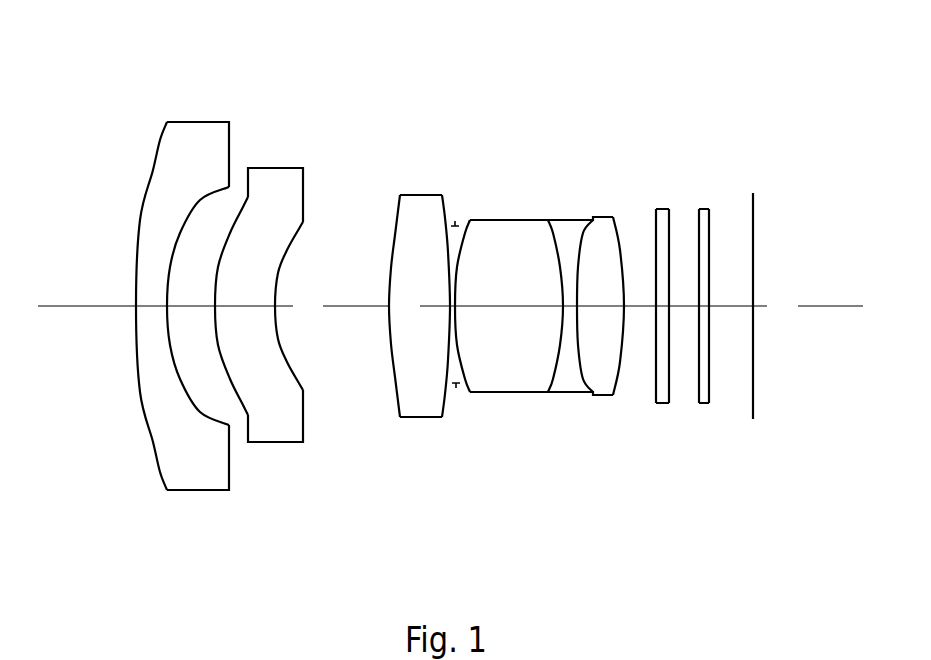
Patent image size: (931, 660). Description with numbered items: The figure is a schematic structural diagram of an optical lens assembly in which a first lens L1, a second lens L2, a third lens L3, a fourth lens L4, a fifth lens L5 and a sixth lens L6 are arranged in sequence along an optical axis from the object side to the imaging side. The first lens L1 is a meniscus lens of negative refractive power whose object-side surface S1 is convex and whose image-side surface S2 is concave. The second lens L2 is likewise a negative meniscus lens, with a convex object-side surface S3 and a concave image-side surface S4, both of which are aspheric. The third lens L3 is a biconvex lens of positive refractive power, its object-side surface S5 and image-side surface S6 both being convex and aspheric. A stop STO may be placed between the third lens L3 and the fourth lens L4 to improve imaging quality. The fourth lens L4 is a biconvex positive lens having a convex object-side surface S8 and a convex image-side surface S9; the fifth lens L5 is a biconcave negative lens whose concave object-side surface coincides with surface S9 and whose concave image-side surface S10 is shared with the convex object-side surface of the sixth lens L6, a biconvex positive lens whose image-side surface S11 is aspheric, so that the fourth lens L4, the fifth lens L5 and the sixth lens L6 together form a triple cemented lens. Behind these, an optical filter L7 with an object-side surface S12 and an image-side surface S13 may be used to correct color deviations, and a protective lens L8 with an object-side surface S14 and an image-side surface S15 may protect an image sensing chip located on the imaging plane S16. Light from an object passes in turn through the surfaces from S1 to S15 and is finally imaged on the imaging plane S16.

The first lens L1 is at (143, 297).
The second lens L2 is at (229, 297).
The third lens L3 is at (391, 297).
The fourth lens L4 is at (544, 297).
The fifth lens L5 is at (655, 297).
The sixth lens L6 is at (710, 297).
The optical filter L7 is at (741, 343).
The protective lens L8 is at (763, 387).
The stop STO is at (455, 222).
The object-side surface of the first lens S1 is at (143, 208).
The image-side surface of the first lens S2 is at (200, 203).
The object-side surface of the second lens S3 is at (238, 215).
The image-side surface of the second lens S4 is at (295, 233).
The object-side surface of the third lens S5 is at (394, 243).
The image-side surface of the third lens S6 is at (445, 223).
The object-side surface of the fourth lens S8 is at (468, 220).
The image-side surface of the fourth lens S9 is at (553, 235).
The image-side surface of the fifth lens S10 is at (593, 218).
The image-side surface of the sixth lens S11 is at (615, 222).
The object-side surface of the optical filter S12 is at (668, 210).
The image-side surface of the optical filter S13 is at (666, 235).
The object-side surface of the protective lens S14 is at (708, 248).
The image-side surface of the protective lens S15 is at (753, 207).
The imaging plane S16 is at (752, 275).